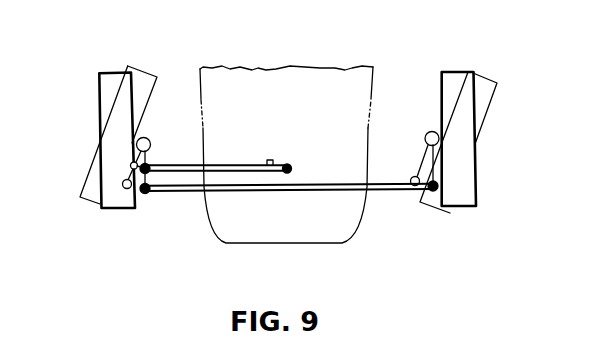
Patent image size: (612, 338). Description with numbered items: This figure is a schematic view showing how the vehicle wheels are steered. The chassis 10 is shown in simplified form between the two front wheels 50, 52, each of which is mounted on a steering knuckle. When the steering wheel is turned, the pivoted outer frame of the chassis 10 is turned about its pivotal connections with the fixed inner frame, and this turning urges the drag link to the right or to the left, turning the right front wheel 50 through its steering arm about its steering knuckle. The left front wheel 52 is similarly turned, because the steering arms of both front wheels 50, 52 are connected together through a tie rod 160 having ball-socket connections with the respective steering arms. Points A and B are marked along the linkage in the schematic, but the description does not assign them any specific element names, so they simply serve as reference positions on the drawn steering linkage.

The chassis 10 is at (353, 66).
The front wheel 50 is at (485, 114).
The front wheel 52 is at (97, 149).
The tie rod 160 is at (179, 190).
The pivot point A is at (290, 168).
The point B is at (269, 160).